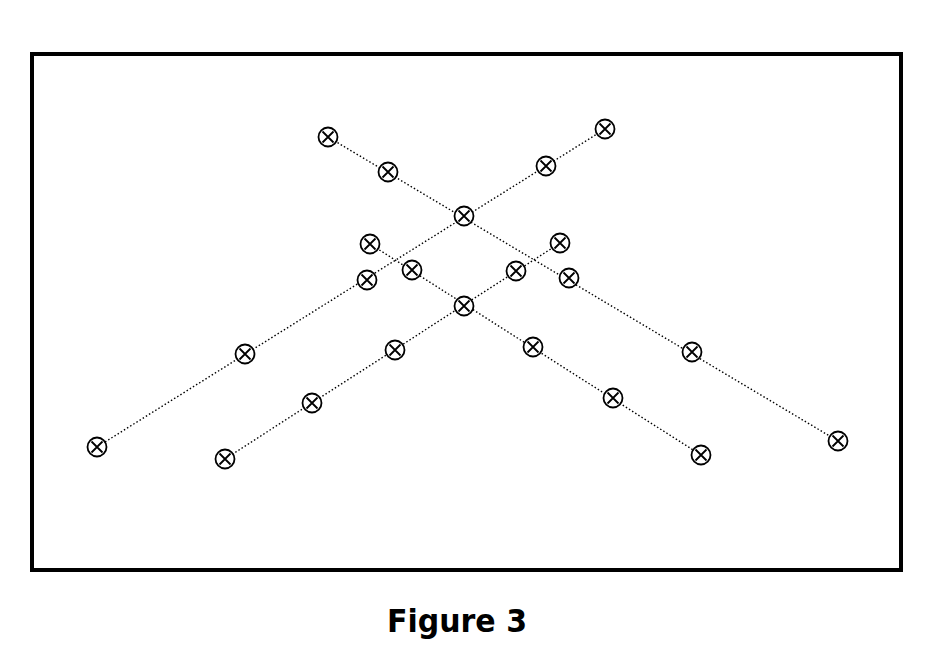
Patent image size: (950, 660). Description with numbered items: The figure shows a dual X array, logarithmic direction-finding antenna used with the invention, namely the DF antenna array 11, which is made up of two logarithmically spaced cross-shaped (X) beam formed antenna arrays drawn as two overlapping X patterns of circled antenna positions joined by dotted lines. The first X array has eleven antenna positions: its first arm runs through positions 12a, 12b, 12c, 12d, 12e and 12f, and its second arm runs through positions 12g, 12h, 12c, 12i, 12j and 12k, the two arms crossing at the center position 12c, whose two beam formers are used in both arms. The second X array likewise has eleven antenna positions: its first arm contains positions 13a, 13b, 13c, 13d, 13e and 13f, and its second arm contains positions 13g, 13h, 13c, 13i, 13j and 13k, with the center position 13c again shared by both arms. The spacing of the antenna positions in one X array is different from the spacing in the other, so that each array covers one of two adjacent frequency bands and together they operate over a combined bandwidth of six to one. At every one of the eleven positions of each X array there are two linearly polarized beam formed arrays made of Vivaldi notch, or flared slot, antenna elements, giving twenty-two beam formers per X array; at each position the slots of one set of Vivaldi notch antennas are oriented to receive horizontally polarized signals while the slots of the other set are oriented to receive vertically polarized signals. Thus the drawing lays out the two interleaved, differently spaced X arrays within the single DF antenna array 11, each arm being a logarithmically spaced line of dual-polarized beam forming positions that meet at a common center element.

The DF antenna array 11 is at (680, 45).
The antenna position 12a is at (311, 140).
The antenna position 12b is at (395, 159).
The center antenna position 12c is at (465, 203).
The antenna position 12d is at (563, 288).
The antenna position 12e is at (688, 362).
The antenna position 12f is at (834, 453).
The antenna position 12g is at (618, 133).
The antenna position 12h is at (542, 156).
The antenna position 12i is at (370, 291).
The antenna position 12j is at (251, 363).
The antenna position 12k is at (105, 456).
The antenna position 13a is at (357, 241).
The antenna position 13b is at (413, 258).
The center antenna position 13c is at (457, 317).
The antenna position 13d is at (528, 357).
The antenna position 13e is at (607, 408).
The antenna position 13f is at (693, 465).
The antenna position 13g is at (572, 233).
The antenna position 13h is at (516, 260).
The antenna position 13i is at (401, 359).
The antenna position 13j is at (317, 413).
The antenna position 13k is at (231, 469).